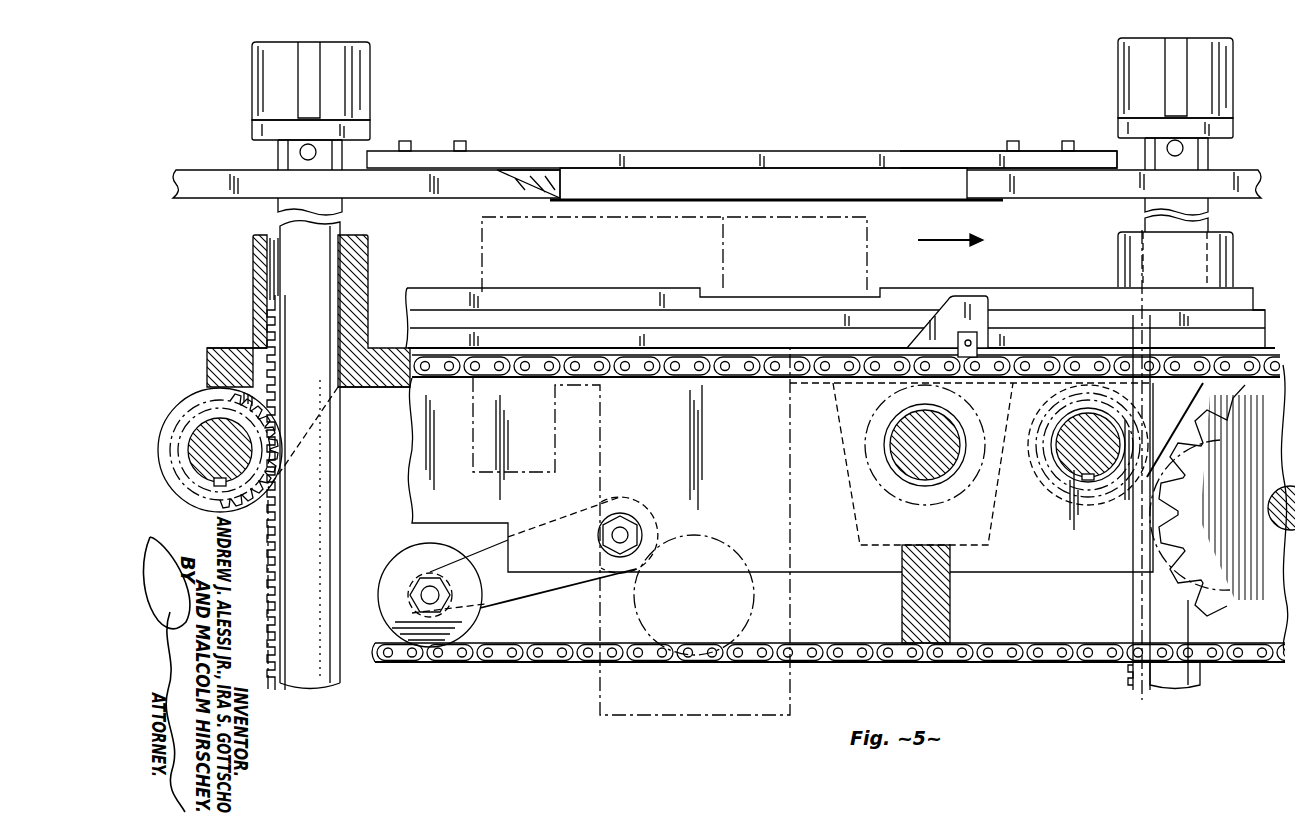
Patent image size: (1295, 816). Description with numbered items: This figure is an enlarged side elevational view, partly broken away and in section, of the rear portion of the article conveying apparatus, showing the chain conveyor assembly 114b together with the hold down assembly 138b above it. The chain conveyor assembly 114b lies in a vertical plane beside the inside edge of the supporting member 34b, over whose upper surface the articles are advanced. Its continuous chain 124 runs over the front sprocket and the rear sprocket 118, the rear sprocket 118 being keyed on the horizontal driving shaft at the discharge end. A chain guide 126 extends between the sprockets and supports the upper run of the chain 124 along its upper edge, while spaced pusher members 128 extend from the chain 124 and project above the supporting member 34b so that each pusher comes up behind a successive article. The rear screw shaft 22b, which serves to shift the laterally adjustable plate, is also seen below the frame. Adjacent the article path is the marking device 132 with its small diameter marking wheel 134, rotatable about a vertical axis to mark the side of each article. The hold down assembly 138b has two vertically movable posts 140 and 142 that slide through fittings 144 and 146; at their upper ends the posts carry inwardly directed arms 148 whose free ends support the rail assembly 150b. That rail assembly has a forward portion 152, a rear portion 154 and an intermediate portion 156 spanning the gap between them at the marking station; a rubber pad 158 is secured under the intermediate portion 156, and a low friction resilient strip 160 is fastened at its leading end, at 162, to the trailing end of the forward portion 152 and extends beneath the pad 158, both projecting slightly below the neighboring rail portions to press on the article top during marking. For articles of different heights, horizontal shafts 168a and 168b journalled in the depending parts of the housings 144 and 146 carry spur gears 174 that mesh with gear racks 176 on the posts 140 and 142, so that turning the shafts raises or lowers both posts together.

The inwardly directed arm 148 is at (355, 109).
The forward portion 152 is at (200, 179).
The rear portion 154 is at (1220, 183).
The pad 158 is at (650, 183).
The leading end securement of strip 162 is at (515, 179).
The rail assembly 150b is at (776, 150).
The intermediate portion 156 is at (914, 161).
The resilient strip 160 is at (1003, 201).
The hold down assembly 138b is at (690, 92).
The marking device 132 is at (495, 240).
The marking wheel 134 is at (850, 243).
The fitting 144 is at (255, 253).
The fitting 146 is at (1215, 257).
The post 140 is at (335, 464).
The gear rack 176 is at (278, 569).
The spur gear 174 is at (248, 491).
The horizontal shaft 168a is at (195, 461).
The horizontal shaft 168b is at (1070, 478).
The rear screw shaft 22b is at (912, 478).
The chain guide 126 is at (1012, 560).
The pusher member 128 is at (968, 297).
The supporting member 34b is at (1024, 320).
The chain 124 is at (850, 659).
The chain conveyor assembly 114b is at (526, 676).
The post 142 is at (1146, 687).
The rear sprocket 118 is at (1260, 618).